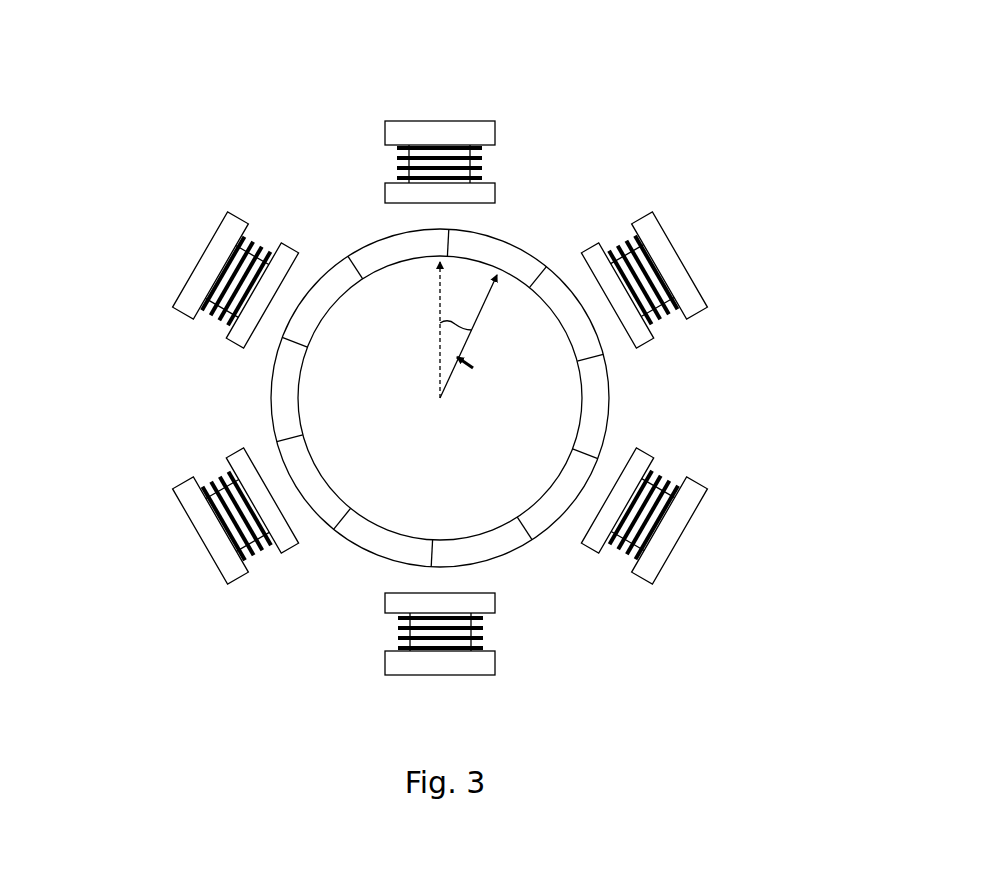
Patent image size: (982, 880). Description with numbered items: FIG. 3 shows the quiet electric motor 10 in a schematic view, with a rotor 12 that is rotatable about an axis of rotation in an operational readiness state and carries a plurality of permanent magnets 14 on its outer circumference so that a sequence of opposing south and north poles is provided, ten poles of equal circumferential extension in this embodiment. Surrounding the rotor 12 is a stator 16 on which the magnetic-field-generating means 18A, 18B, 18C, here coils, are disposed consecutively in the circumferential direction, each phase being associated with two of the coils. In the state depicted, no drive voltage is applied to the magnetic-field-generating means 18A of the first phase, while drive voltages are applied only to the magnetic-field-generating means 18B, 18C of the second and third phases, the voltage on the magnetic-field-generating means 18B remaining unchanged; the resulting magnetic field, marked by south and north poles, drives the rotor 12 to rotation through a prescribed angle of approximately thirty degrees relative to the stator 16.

The electric motor 10 is at (797, 90).
The rotor 12 is at (531, 237).
The permanent magnets 14 is at (600, 437).
The stator 16 is at (820, 410).
The magnetic-field-generating means 18A is at (483, 105).
The magnetic-field-generating means 18B is at (727, 277).
The magnetic-field-generating means 18C is at (188, 204).